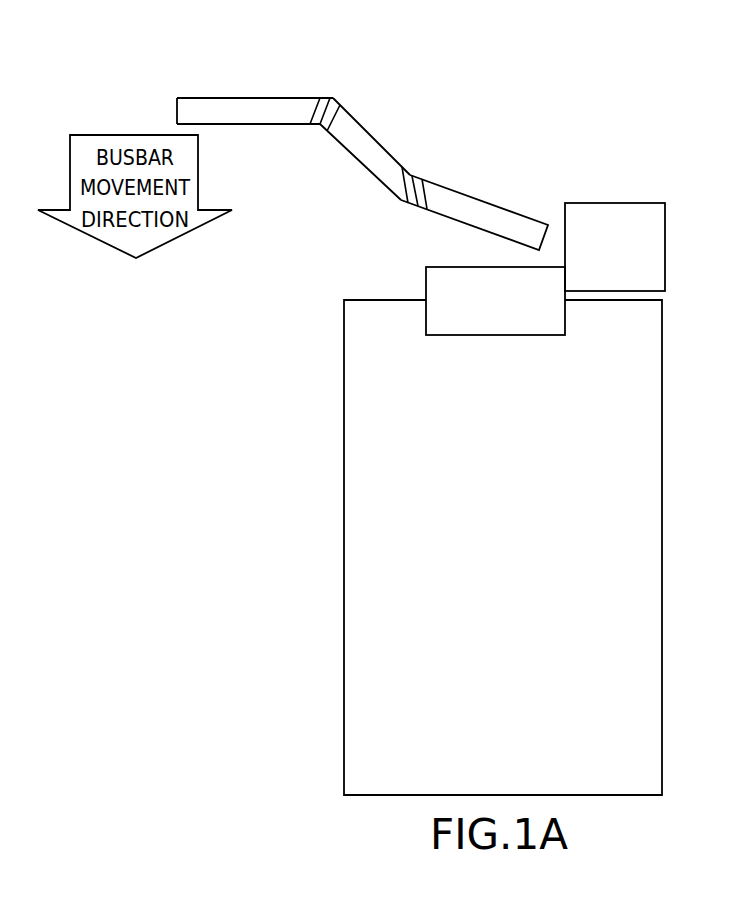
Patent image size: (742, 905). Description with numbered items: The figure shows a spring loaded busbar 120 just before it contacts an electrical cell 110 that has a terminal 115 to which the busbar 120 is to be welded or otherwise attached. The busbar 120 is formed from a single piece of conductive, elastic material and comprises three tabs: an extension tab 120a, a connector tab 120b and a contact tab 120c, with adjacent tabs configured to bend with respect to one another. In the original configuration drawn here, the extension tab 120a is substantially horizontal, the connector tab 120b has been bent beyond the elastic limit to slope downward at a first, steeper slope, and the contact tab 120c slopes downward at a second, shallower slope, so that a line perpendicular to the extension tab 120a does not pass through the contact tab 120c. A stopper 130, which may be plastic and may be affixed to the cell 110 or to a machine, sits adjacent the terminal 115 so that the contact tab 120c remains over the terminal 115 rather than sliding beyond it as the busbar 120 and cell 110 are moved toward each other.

The electrical cell 110 is at (344, 548).
The terminal 115 is at (426, 281).
The spring loaded busbar 120 is at (362, 144).
The extension tab 120a is at (258, 103).
The connector tab 120b is at (366, 138).
The contact tab 120c is at (480, 210).
The stopper 130 is at (666, 241).